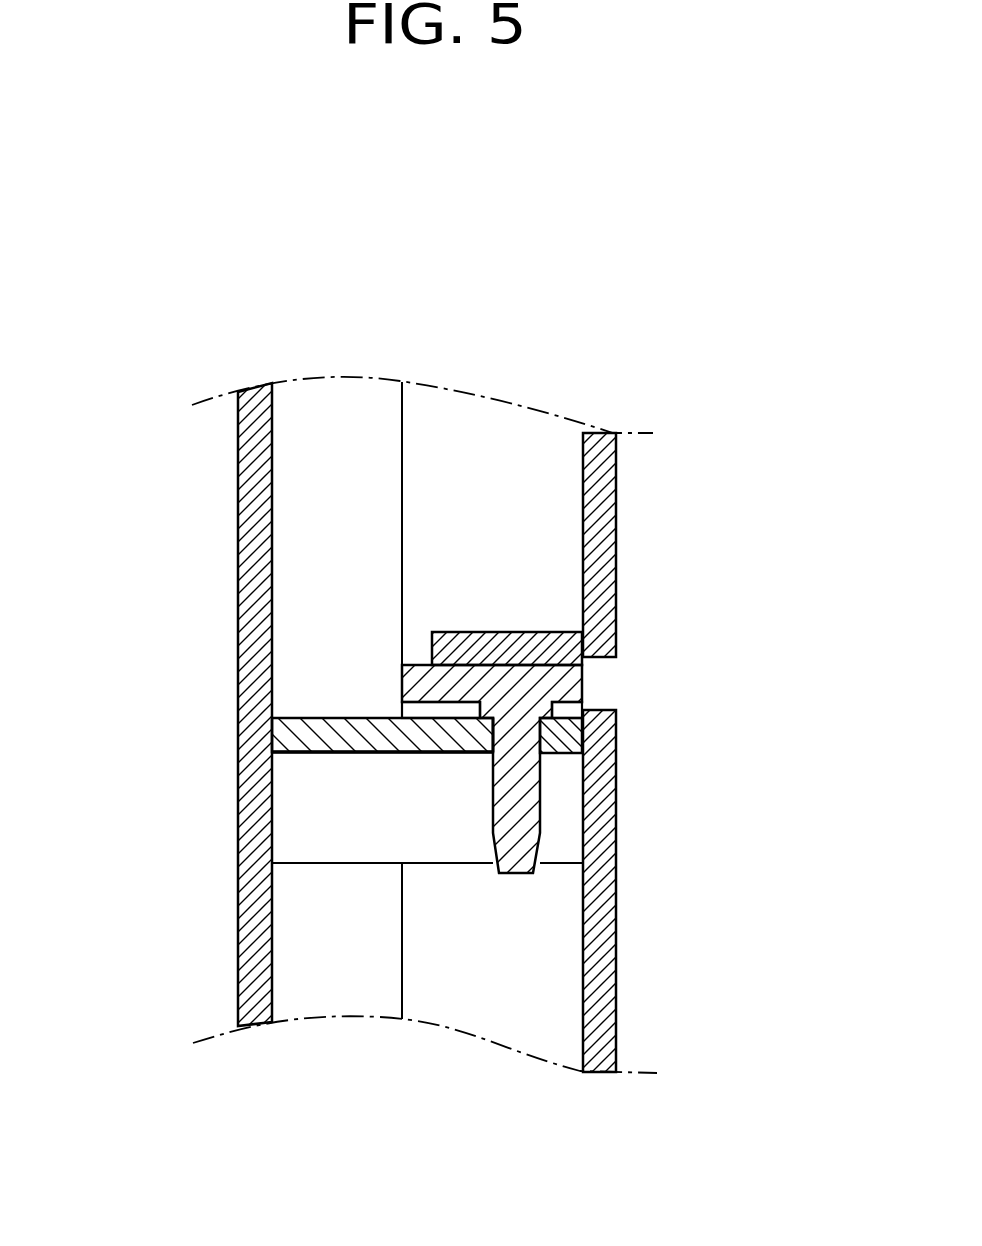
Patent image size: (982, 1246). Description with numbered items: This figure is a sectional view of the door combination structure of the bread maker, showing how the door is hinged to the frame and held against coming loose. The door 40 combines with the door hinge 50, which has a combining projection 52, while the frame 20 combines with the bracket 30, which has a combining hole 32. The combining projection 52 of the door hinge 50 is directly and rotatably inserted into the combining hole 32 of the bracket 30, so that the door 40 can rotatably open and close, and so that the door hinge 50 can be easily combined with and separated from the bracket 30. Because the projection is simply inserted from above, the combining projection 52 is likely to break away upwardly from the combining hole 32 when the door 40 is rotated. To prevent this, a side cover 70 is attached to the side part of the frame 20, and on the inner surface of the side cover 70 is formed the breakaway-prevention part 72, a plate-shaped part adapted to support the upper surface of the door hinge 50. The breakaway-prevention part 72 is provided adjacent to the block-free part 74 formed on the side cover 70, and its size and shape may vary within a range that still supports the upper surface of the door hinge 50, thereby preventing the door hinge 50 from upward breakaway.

The frame 20 is at (238, 590).
The bracket 30 is at (296, 712).
The combining hole 32 is at (493, 720).
The door 40 is at (545, 467).
The door hinge 50 is at (568, 708).
The combining projection 52 is at (540, 833).
The side cover 70 is at (620, 583).
The breakaway-prevention part 72 is at (472, 632).
The block-free part 74 is at (605, 660).